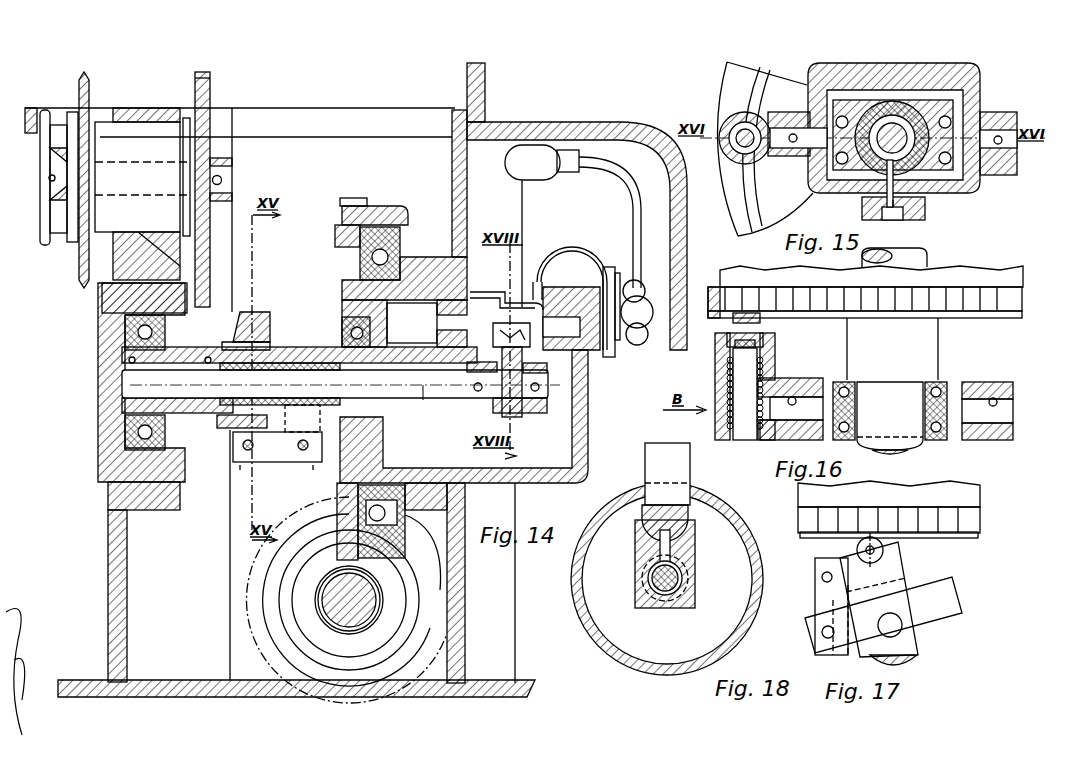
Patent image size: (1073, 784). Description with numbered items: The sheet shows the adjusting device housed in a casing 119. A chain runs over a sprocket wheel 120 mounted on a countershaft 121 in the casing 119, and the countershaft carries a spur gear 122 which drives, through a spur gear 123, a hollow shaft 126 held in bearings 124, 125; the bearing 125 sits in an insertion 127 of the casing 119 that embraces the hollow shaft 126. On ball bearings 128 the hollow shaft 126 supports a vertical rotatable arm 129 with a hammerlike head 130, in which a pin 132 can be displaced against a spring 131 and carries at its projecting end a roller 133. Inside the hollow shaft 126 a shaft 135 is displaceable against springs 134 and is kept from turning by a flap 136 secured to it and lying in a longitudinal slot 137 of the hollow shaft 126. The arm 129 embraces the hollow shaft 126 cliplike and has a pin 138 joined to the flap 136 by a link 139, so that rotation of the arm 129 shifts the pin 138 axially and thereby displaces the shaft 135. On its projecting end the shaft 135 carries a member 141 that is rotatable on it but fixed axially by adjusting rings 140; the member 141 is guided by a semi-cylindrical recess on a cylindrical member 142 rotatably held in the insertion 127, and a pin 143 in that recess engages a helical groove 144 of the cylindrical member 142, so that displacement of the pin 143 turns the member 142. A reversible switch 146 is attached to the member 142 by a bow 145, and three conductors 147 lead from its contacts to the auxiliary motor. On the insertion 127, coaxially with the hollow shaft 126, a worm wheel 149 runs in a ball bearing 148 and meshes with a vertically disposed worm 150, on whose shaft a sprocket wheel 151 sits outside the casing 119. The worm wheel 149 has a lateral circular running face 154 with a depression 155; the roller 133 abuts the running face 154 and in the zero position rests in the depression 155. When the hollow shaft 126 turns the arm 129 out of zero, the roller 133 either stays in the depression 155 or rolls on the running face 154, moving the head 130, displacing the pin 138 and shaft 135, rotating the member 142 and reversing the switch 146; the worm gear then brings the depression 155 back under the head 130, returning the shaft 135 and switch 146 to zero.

In FIG. 14, the casing 119 is at (608, 123).
In FIG. 14, the sprocket wheel 120 is at (89, 94).
In FIG. 14, the countershaft 121 is at (230, 179).
In FIG. 14, the spur gear 122 is at (211, 92).
In FIG. 14, the spur gear 123 is at (207, 302).
In FIG. 14, the bearing 124 is at (128, 333).
In FIG. 14, the bearing 125 is at (342, 330).
In FIG. 14, the hollow shaft 126 is at (275, 340).
In FIG. 15, the hollow shaft 126 is at (860, 182).
In FIG. 16, the hollow shaft 126 is at (893, 428).
In FIG. 14, the insertion 127 is at (580, 440).
In FIG. 18, the insertion 127 is at (596, 630).
In FIG. 15, the ball bearings 128 is at (953, 120).
In FIG. 16, the ball bearings 128 is at (848, 381).
In FIG. 14, the rotatable arm 129 is at (273, 312).
In FIG. 15, the rotatable arm 129 is at (757, 160).
In FIG. 16, the rotatable arm 129 is at (770, 440).
In FIG. 17, the rotatable arm 129 is at (902, 638).
In FIG. 16, the hammerlike head 130 is at (715, 371).
In FIG. 17, the hammerlike head 130 is at (862, 578).
In FIG. 16, the spring 131 is at (775, 369).
In FIG. 16, the pin 132 is at (748, 366).
In FIG. 16, the roller 133 is at (765, 341).
In FIG. 17, the roller 133 is at (857, 544).
In FIG. 14, the springs 134 is at (227, 420).
In FIG. 14, the shaft 135 is at (423, 388).
In FIG. 18, the shaft 135 is at (679, 578).
In FIG. 14, the flap 136 is at (310, 432).
In FIG. 15, the flap 136 is at (888, 202).
In FIG. 14, the longitudinal slot 137 is at (448, 412).
In FIG. 14, the pin 138 is at (250, 452).
In FIG. 15, the pin 138 is at (925, 206).
In FIG. 14, the link 139 is at (277, 452).
In FIG. 15, the link 139 is at (900, 207).
In FIG. 17, the link 139 is at (830, 604).
In FIG. 14, the adjusting rings 140 is at (487, 364).
In FIG. 14, the member 141 is at (512, 420).
In FIG. 18, the member 141 is at (691, 556).
In FIG. 14, the cylindrical member 142 is at (440, 335).
In FIG. 18, the cylindrical member 142 is at (645, 522).
In FIG. 14, the pin 143 is at (530, 377).
In FIG. 18, the pin 143 is at (660, 554).
In FIG. 14, the helical groove 144 is at (503, 303).
In FIG. 18, the helical groove 144 is at (681, 528).
In FIG. 14, the bow 145 is at (568, 250).
In FIG. 18, the bow 145 is at (690, 470).
In FIG. 14, the reversible switch 146 is at (635, 318).
In FIG. 14, the conductors 147 is at (625, 180).
In FIG. 14, the ball bearing 148 is at (403, 248).
In FIG. 14, the worm wheel 149 is at (348, 200).
In FIG. 15, the worm wheel 149 is at (732, 82).
In FIG. 16, the worm wheel 149 is at (972, 300).
In FIG. 17, the worm wheel 149 is at (945, 523).
In FIG. 14, the worm 150 is at (365, 598).
In FIG. 14, the sprocket wheel 151 is at (258, 644).
In FIG. 14, the running face 154 is at (337, 230).
In FIG. 15, the running face 154 is at (748, 102).
In FIG. 16, the running face 154 is at (957, 318).
In FIG. 17, the running face 154 is at (944, 533).
In FIG. 16, the depression 155 is at (733, 318).
In FIG. 17, the depression 155 is at (870, 538).